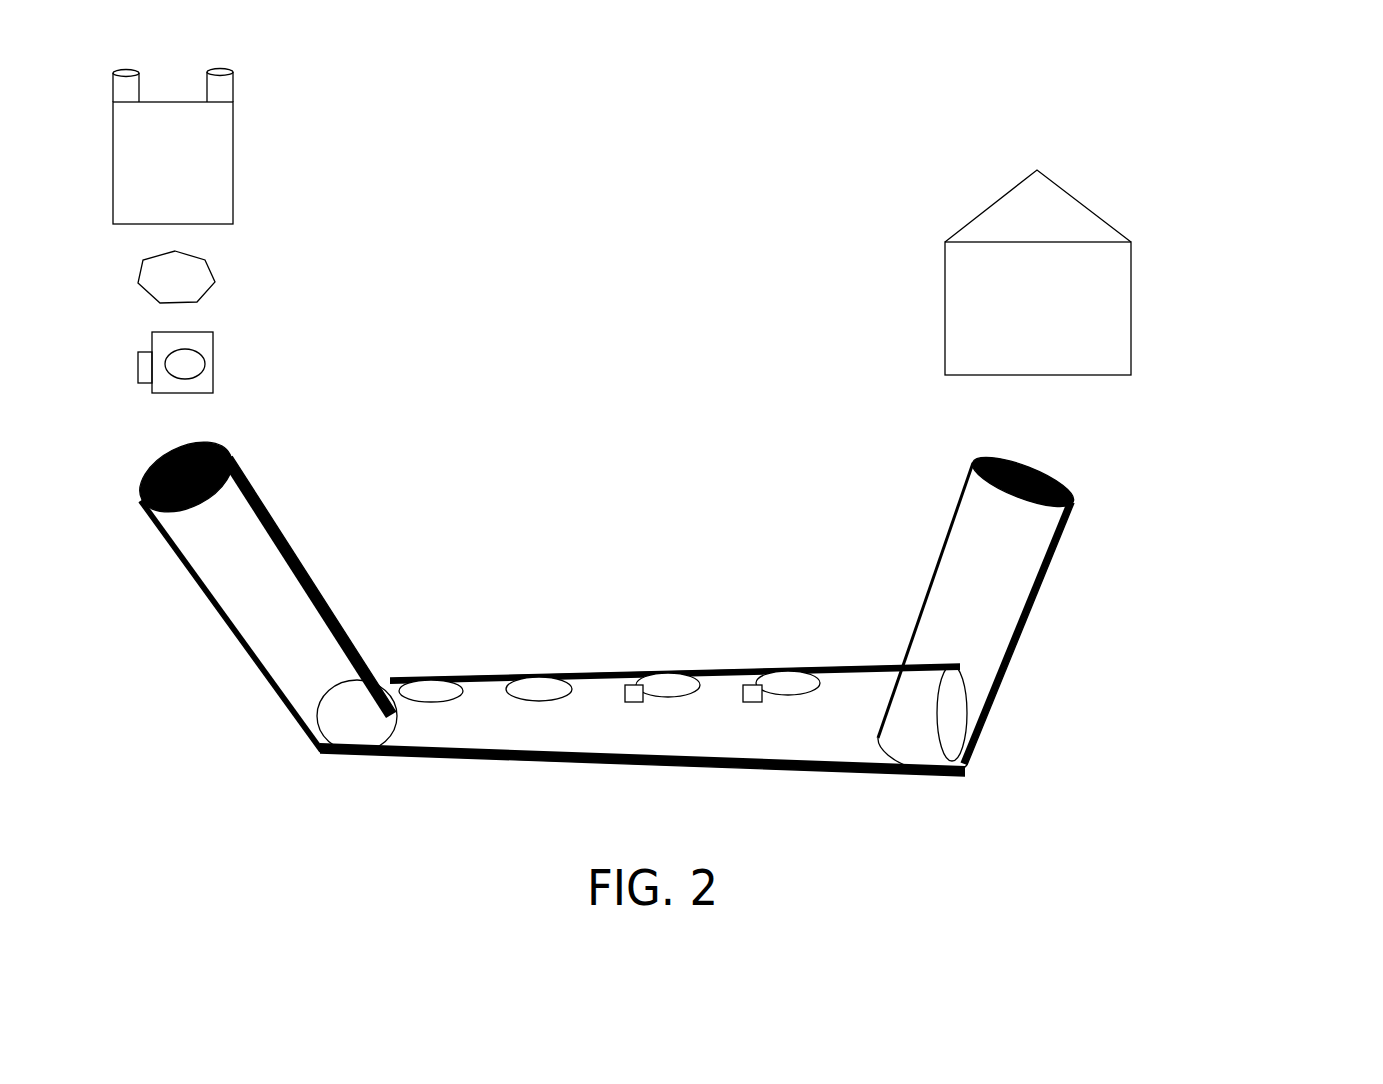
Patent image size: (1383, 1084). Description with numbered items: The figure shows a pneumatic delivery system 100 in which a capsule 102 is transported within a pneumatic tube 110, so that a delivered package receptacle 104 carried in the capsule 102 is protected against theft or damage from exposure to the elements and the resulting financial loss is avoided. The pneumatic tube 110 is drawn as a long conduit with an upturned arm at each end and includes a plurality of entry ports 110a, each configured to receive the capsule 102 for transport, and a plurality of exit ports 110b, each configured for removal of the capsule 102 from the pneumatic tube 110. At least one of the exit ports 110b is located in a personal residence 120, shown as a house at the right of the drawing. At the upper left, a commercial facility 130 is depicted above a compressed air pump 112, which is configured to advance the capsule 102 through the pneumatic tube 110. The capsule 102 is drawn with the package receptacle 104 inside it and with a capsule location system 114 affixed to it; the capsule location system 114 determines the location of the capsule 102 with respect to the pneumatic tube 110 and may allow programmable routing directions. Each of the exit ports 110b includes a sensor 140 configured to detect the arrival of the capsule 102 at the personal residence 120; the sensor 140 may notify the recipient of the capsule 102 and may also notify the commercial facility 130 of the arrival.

The pneumatic delivery system 100 is at (1365, 137).
The commercial facility 130 is at (233, 150).
The compressed air pump 112 is at (207, 262).
The capsule 102 is at (194, 328).
The package receptacle 104 is at (213, 363).
The capsule location system 114 is at (138, 383).
The personal residence 120 is at (930, 302).
The pneumatic tube 110 is at (248, 785).
The entry ports 110a is at (232, 455).
The exit ports 110b is at (1002, 463).
The sensor 140 is at (634, 702).